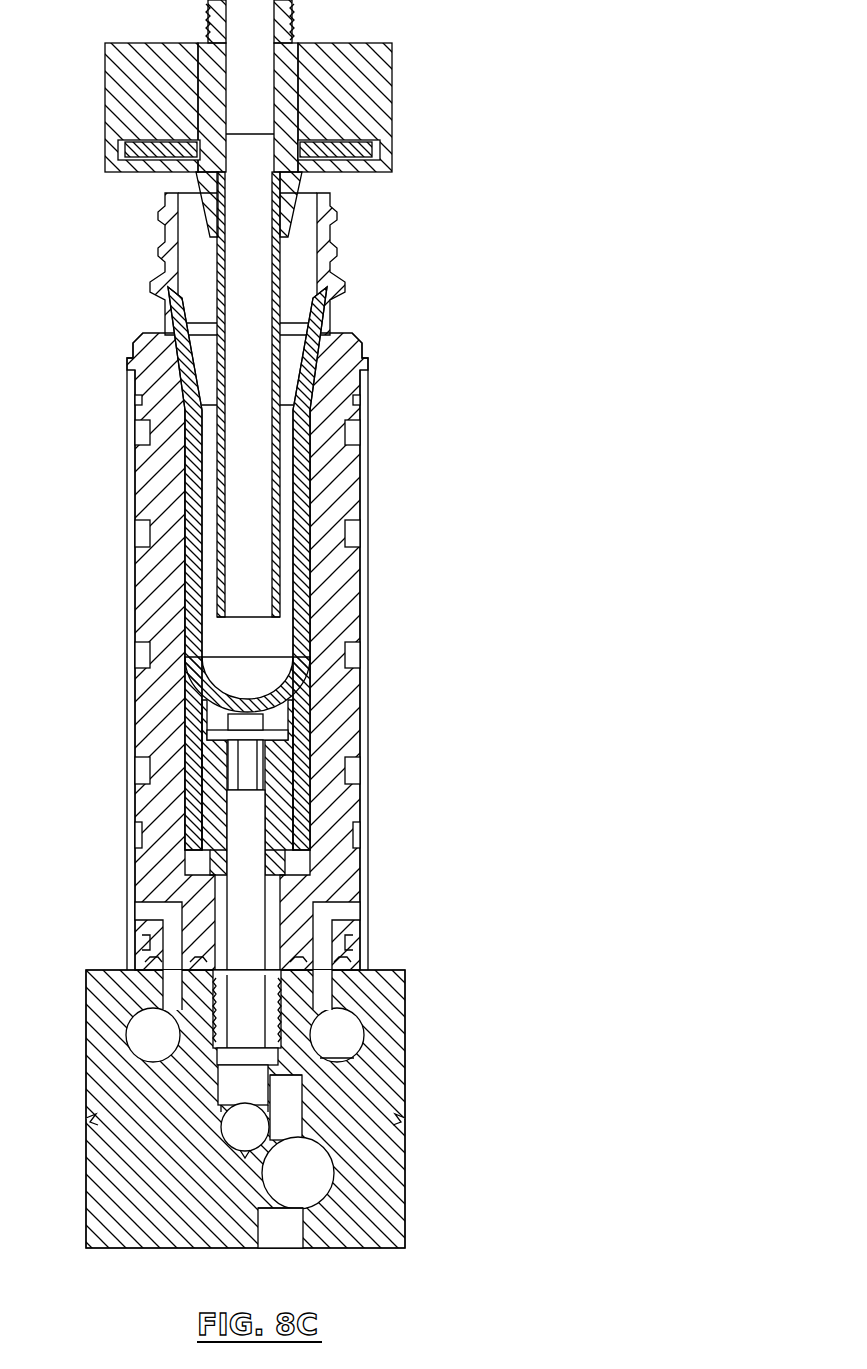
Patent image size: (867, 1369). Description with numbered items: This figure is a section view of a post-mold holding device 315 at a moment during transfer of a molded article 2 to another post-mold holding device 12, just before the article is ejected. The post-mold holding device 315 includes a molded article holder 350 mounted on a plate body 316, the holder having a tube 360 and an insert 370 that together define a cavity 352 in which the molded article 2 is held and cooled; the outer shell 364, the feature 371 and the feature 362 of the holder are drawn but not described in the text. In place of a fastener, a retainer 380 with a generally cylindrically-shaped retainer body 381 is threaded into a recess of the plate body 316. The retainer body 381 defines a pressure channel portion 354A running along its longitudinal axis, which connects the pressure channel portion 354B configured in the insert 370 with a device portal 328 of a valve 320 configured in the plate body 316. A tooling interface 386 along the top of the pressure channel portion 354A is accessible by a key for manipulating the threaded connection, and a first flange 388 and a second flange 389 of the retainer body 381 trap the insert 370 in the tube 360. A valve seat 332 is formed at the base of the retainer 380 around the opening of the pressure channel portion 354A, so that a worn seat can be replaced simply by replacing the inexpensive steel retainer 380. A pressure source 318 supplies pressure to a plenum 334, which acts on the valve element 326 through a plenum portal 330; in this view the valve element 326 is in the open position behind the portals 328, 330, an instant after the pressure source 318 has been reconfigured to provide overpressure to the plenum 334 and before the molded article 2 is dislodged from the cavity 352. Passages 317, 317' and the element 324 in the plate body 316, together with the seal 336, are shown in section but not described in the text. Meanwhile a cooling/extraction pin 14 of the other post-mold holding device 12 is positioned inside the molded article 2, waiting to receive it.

The post-mold holding device 12 is at (425, 111).
The molded article 2 is at (332, 208).
The cooling/extraction pin 14 is at (282, 282).
The molded article holder 350 is at (402, 401).
The tube 360 is at (350, 494).
The outer shell 364 is at (366, 563).
The cavity 352 is at (189, 646).
The insert 370 is at (309, 682).
The sleeve cup 371 is at (300, 714).
The first flange 388 is at (289, 740).
The tooling interface 386 is at (263, 774).
The second flange 389 is at (288, 846).
The retainer body 381 is at (322, 888).
The slot 362 is at (288, 930).
The retainer 380 is at (347, 957).
The pressure channel portion 354B is at (206, 736).
The pressure channel portion 354A is at (236, 822).
The post-mold holding device 315 is at (520, 930).
The plate body 316 is at (389, 1168).
The passage 317 is at (337, 1035).
The channel 317' is at (402, 990).
The valve seat 332 is at (127, 1038).
The seal 336 is at (226, 1080).
The plenum portal 330 is at (221, 1105).
The valve element 326 is at (262, 1139).
The port 324 is at (232, 1150).
The valve 320 is at (218, 1157).
The pressure source 318 is at (320, 1188).
The device portal 328 is at (336, 1072).
The plenum 334 is at (291, 1105).